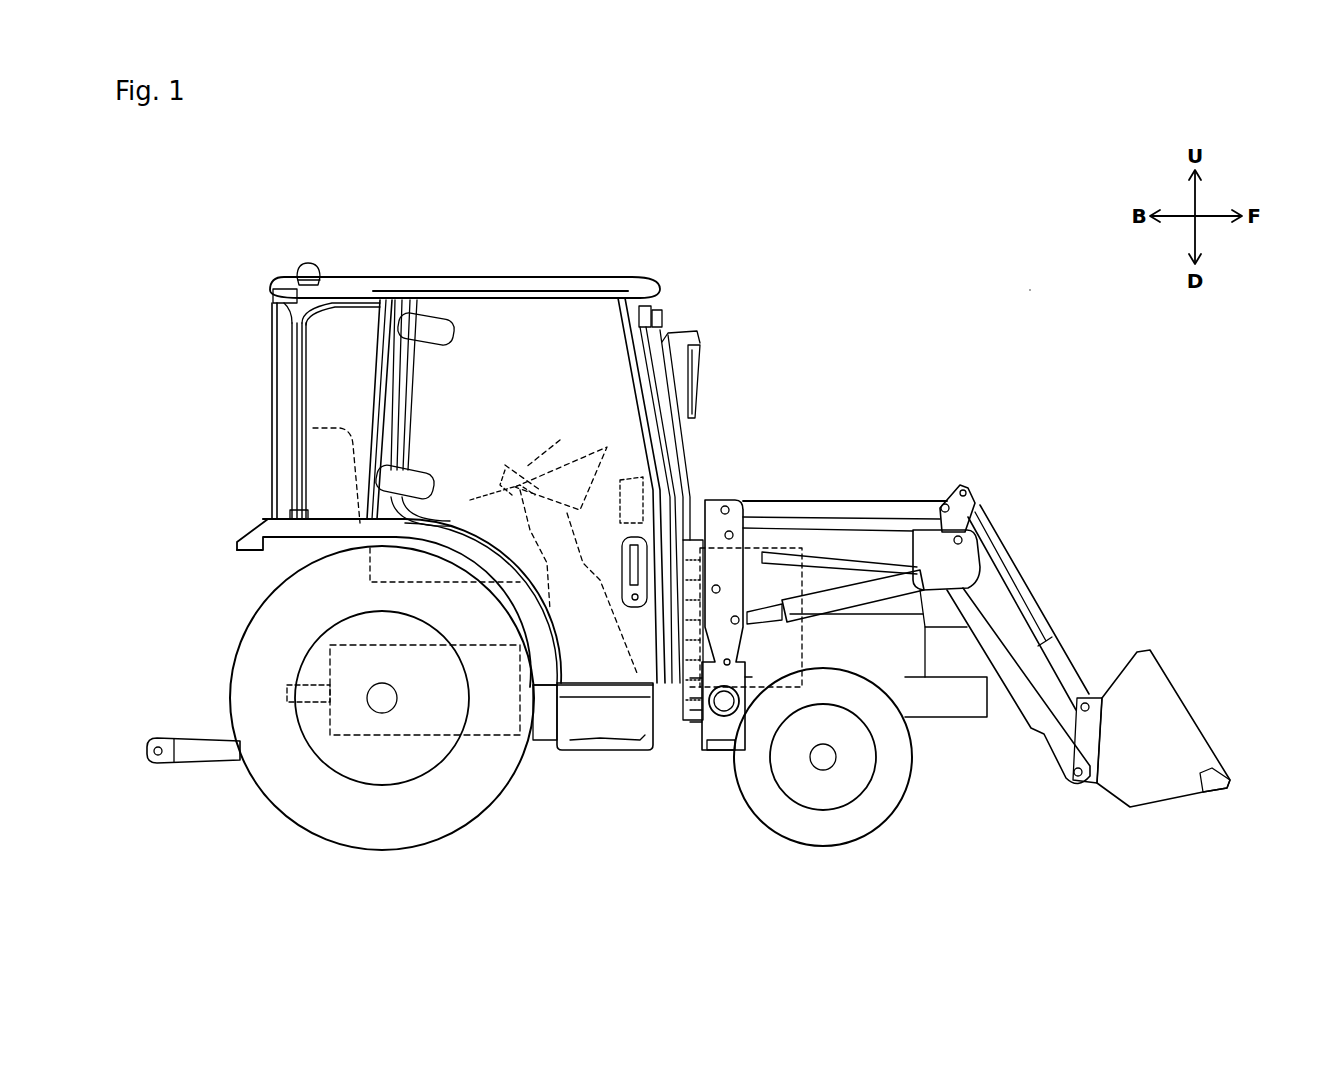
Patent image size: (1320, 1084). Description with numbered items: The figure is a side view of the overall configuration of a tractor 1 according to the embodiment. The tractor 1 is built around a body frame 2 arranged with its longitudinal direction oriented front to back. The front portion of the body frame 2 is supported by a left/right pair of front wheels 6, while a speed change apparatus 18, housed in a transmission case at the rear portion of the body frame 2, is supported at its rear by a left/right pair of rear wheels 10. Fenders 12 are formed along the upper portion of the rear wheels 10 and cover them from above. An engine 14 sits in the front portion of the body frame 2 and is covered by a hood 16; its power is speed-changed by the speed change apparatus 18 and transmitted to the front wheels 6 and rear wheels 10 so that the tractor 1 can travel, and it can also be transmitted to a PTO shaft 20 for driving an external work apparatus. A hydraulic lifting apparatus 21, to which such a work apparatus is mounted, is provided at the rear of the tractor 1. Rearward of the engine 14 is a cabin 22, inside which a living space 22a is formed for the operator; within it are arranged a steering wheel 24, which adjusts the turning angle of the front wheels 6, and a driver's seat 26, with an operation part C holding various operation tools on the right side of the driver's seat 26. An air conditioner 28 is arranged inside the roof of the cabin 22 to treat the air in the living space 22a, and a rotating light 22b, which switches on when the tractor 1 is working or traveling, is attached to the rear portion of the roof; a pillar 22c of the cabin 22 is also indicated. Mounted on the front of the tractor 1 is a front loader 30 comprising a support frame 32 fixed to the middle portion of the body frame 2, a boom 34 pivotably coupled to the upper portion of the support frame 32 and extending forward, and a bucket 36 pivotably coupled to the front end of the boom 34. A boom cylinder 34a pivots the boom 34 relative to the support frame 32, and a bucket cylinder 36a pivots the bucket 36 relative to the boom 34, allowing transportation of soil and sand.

The tractor 1 is at (1049, 266).
The body frame 2 is at (965, 706).
The front wheels 6 is at (884, 812).
The rear wheels 10 is at (300, 820).
The fenders 12 is at (332, 522).
The engine 14 is at (775, 500).
The hood 16 is at (890, 657).
The speed change apparatus 18 is at (490, 735).
The PTO shaft 20 is at (300, 665).
The hydraulic lifting apparatus 21 is at (184, 773).
The cabin 22 is at (657, 266).
The living space 22a is at (712, 356).
The rotating light 22b is at (305, 262).
The rear pillar 22c is at (385, 370).
The steering wheel 24 is at (548, 468).
The driver's seat 26 is at (313, 428).
The air conditioner 28 is at (528, 270).
The front loader 30 is at (1040, 515).
The support frame 32 is at (710, 497).
The boom 34 is at (893, 545).
The boom cylinder 34a is at (848, 598).
The bucket 36 is at (1168, 697).
The bucket cylinder 36a is at (1038, 615).
The operation part C is at (480, 482).